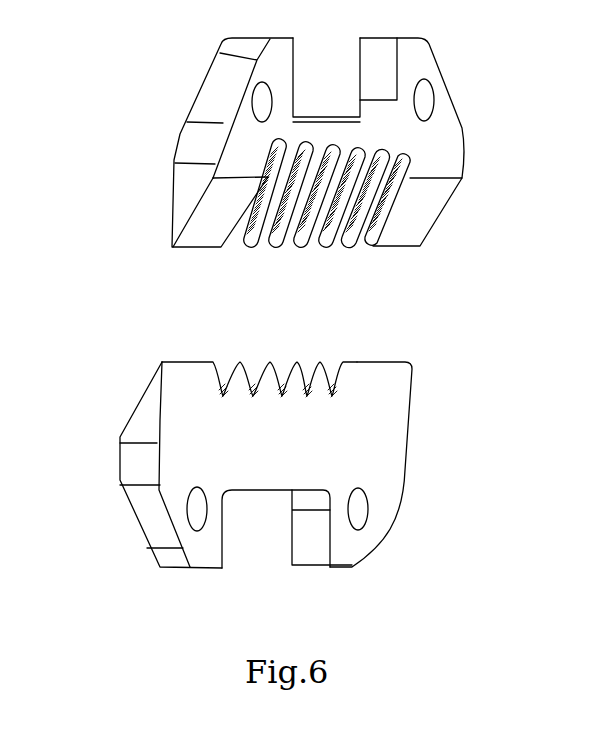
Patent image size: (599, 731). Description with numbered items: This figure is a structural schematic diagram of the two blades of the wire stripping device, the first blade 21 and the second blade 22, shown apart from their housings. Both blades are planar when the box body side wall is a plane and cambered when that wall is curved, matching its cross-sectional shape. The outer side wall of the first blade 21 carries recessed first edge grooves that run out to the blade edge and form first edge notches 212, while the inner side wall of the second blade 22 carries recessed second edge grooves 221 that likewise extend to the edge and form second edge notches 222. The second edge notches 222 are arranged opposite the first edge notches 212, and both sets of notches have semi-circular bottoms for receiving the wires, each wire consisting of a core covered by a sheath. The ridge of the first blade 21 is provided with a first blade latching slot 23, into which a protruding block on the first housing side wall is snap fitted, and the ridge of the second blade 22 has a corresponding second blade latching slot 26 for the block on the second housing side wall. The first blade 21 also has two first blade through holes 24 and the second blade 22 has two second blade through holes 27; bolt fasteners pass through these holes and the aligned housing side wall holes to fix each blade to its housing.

The first blade 21 is at (145, 422).
The second blade 22 is at (207, 102).
The first blade latching slot 23 is at (252, 535).
The first blade through hole 24 is at (358, 510).
The second blade latching slot 26 is at (332, 83).
The second blade through hole 27 is at (425, 97).
The first edge notch 212 is at (327, 362).
The second edge groove 221 is at (368, 237).
The second edge notch 222 is at (313, 243).